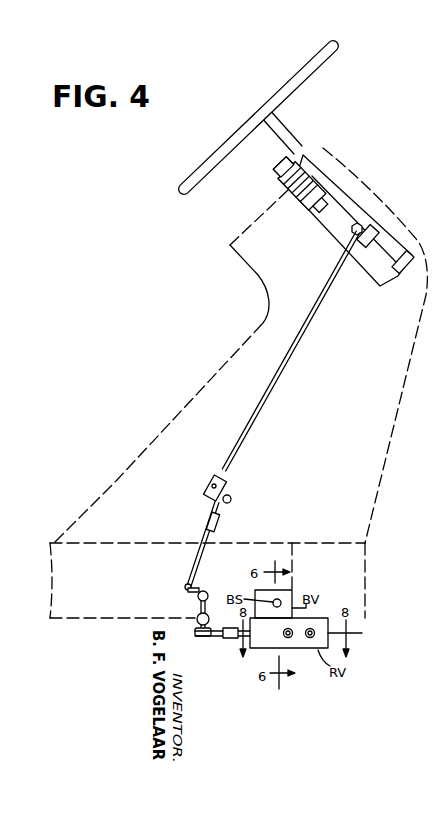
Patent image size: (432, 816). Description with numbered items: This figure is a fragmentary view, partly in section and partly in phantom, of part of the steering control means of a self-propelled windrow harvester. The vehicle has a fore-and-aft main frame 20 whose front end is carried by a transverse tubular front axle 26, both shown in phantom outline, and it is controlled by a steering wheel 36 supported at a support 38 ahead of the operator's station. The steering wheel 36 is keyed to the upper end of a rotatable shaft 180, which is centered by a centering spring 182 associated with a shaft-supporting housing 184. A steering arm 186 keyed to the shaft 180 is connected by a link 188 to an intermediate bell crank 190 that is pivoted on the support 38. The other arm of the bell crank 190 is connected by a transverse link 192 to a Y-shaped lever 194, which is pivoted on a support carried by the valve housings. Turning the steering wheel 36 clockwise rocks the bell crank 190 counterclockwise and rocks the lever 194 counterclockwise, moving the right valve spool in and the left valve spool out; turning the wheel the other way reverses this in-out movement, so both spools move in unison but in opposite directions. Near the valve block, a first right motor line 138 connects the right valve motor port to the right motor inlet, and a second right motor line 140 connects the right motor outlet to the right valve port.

The main frame 20 is at (104, 545).
The front axle 26 is at (365, 568).
The steering wheel 36 is at (299, 78).
The support 38 is at (244, 350).
The first right motor line 138 is at (310, 640).
The second right motor line 140 is at (286, 637).
The rotatable shaft 180 is at (290, 151).
The centering spring 182 is at (325, 163).
The shaft-supporting housing 184 is at (378, 279).
The steering arm 186 is at (370, 231).
The link 188 is at (298, 342).
The intermediate bell crank 190 is at (214, 519).
The transverse link 192 is at (197, 603).
The Y-shaped lever 194 is at (212, 638).